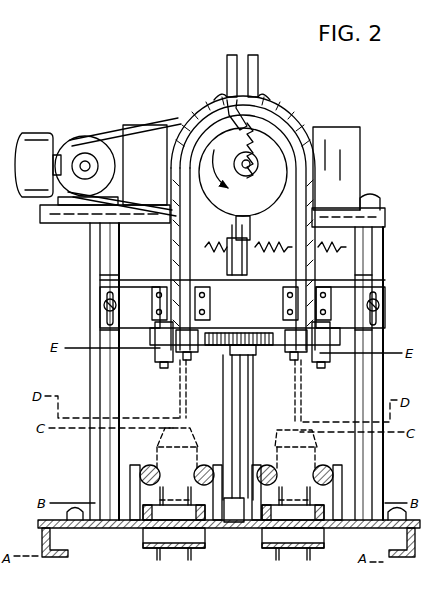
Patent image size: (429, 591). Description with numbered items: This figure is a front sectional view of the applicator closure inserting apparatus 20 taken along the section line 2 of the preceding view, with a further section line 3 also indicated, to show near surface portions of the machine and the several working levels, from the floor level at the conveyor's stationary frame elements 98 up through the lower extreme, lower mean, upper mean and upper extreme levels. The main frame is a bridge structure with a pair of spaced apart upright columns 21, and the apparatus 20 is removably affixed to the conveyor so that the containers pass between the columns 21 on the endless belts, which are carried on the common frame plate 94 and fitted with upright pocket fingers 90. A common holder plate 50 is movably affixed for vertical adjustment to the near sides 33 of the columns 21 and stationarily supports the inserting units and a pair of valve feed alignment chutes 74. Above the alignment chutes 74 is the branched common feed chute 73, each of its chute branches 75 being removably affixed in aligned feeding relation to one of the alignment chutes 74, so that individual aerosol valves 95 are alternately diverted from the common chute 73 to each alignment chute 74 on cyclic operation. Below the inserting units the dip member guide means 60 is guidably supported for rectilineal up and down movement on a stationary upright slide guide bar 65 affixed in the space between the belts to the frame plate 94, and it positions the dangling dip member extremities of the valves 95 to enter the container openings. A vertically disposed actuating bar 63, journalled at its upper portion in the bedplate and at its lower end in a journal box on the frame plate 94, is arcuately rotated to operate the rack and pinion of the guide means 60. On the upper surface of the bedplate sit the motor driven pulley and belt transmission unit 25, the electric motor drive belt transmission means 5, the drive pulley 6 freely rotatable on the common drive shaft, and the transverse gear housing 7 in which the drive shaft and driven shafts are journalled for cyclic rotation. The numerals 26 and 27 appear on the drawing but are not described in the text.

The section line 2— 2 is at (18, 458).
The section line 3— 3 is at (360, 68).
The electric motor drive belt transmission means 5 is at (33, 102).
The drive pulley 6 is at (187, 30).
The transverse gear housing 7 is at (358, 136).
The applicator closure inserting apparatus 20 is at (72, 224).
The upright columns 21 is at (97, 266).
The motor driven pulley and belt transmission unit 25 is at (115, 135).
The drum 26 is at (241, 209).
The motor 27 is at (8, 236).
The near sides of the columns 33 is at (119, 406).
The common holder plate 50 is at (140, 309).
The dip member guide means 60 is at (164, 366).
The actuating bar 63 is at (236, 416).
The slide guide bar 65 is at (251, 412).
The branched common feed chute 73 is at (228, 66).
The valve feed alignment chute 74 is at (172, 240).
The chute branches 75 is at (194, 112).
The upright pocket fingers 90 is at (311, 500).
The common frame plate 94 is at (138, 535).
The aerosol valves 95 is at (181, 389).
The stationary frame elements 98 is at (62, 562).